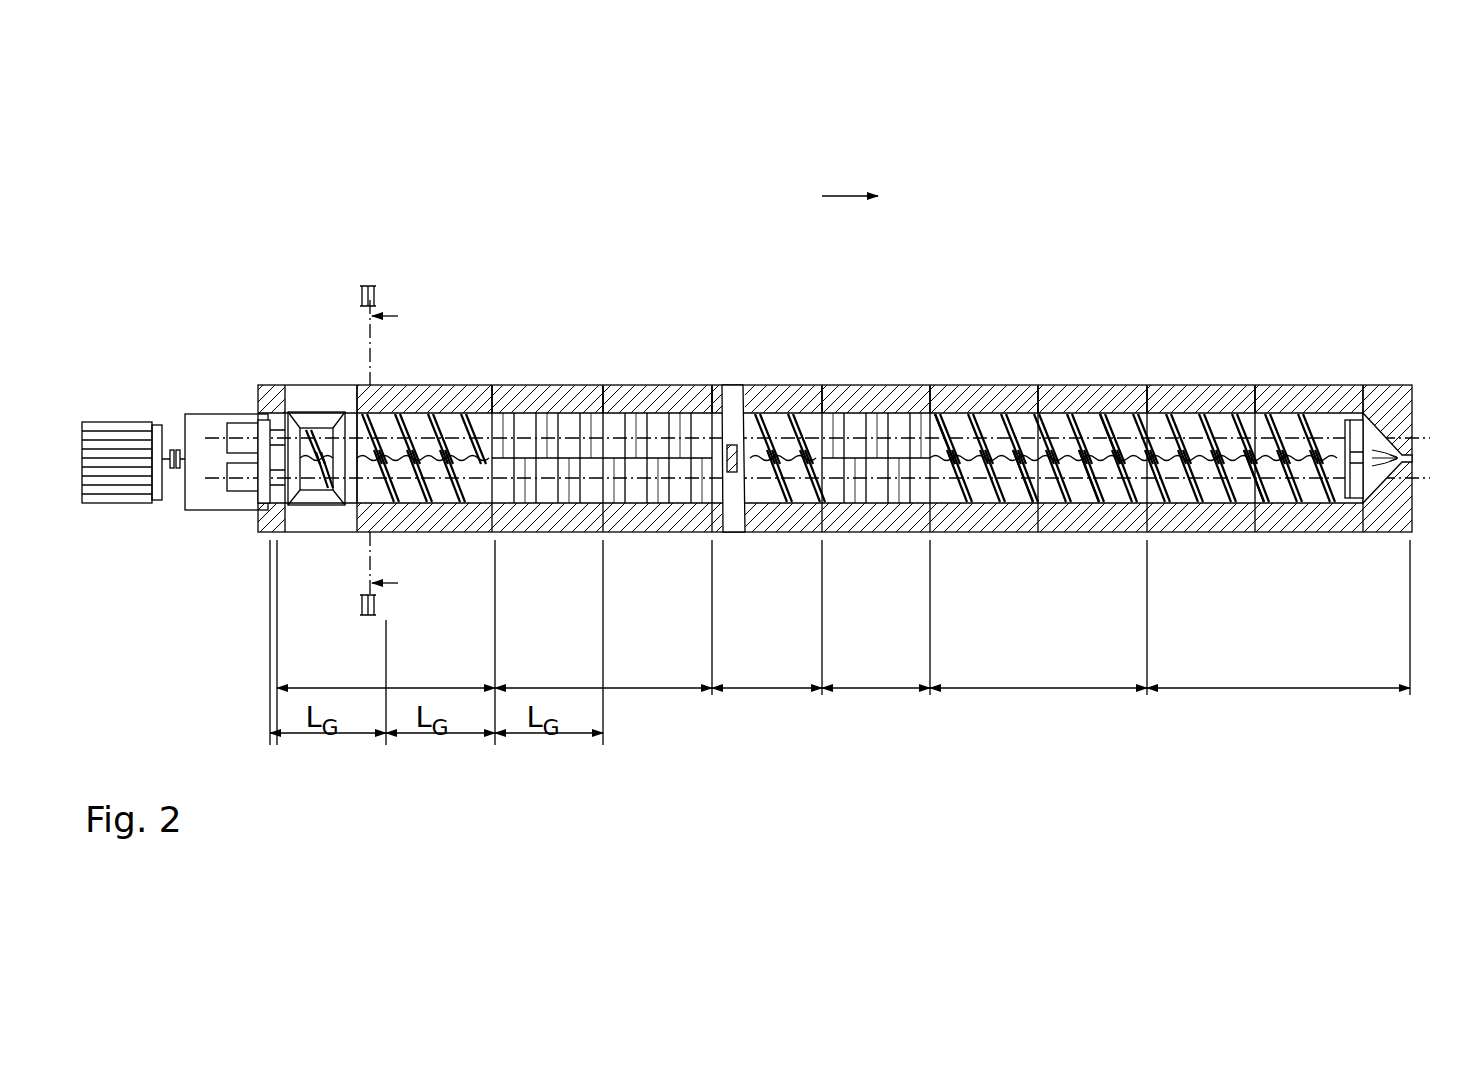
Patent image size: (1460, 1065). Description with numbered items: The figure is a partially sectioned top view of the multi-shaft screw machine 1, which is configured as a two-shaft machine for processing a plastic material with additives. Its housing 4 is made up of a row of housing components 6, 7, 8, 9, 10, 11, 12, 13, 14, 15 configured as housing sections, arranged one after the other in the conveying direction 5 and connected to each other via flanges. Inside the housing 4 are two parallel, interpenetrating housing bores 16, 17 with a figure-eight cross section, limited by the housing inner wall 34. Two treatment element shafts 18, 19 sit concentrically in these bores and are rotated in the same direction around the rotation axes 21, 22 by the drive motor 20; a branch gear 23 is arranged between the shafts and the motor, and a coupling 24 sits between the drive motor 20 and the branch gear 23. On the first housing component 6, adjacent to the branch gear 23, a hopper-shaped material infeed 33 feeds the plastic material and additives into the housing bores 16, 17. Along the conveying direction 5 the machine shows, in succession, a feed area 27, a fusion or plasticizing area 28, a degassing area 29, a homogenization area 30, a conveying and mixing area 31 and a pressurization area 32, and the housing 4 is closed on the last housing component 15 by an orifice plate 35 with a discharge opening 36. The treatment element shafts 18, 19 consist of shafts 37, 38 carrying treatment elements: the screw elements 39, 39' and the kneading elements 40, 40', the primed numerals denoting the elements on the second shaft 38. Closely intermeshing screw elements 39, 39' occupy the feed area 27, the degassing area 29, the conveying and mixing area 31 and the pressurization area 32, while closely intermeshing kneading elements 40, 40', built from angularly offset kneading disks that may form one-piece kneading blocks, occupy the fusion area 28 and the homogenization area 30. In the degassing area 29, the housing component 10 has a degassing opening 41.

The multi-shaft screw machine 1 is at (772, 180).
The housing 4 is at (585, 383).
The conveying direction 5 is at (846, 196).
The housing component 6 is at (361, 410).
The housing component 7 is at (473, 383).
The housing component 8 is at (525, 383).
The housing component 9 is at (637, 383).
The housing component 10 is at (800, 383).
The housing component 11 is at (855, 383).
The housing component 12 is at (1005, 383).
The housing component 13 is at (1072, 383).
The housing component 14 is at (1155, 383).
The housing component 15 is at (1263, 383).
The housing bore 16 is at (402, 485).
The housing bore 17 is at (483, 396).
The treatment element shaft 18 is at (1032, 499).
The treatment element shaft 19 is at (939, 413).
The drive motor 20 is at (107, 420).
The rotation axis 21 is at (1112, 493).
The rotation axis 22 is at (1088, 435).
The branch gear 23 is at (212, 412).
The coupling 24 is at (172, 450).
The feed area 27 is at (386, 673).
The fusion area 28 is at (603, 673).
The degassing area 29 is at (767, 673).
The homogenization area 30 is at (876, 673).
The conveying and mixing area 31 is at (1038, 673).
The pressurization area 32 is at (1278, 673).
The material infeed 33 is at (310, 414).
The housing inner wall 34 is at (1267, 494).
The orifice plate 35 is at (1400, 393).
The discharge opening 36 is at (1414, 460).
The shaft 37 is at (215, 490).
The shaft 38 is at (244, 413).
The screw element 39 is at (819, 535).
The screw element 39' is at (842, 355).
The kneading element 40 is at (712, 516).
The kneading element 40' is at (711, 374).
The degassing opening 41 is at (733, 440).